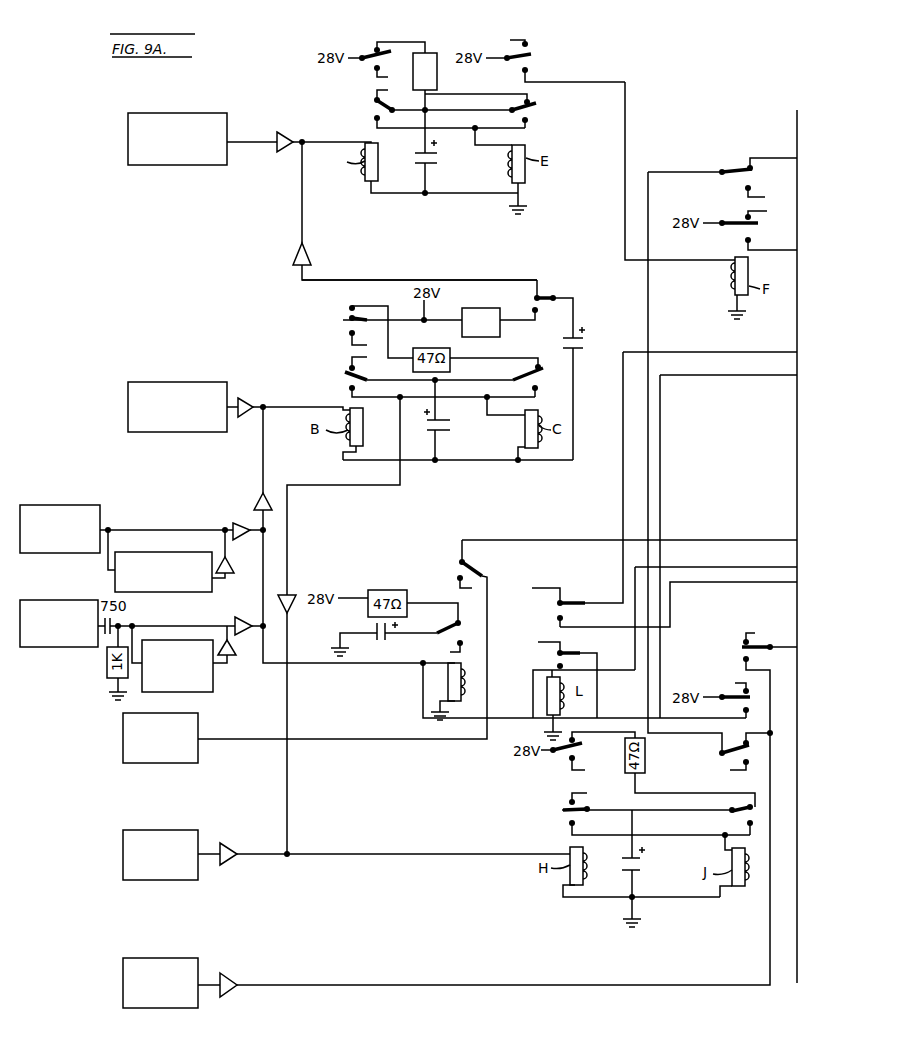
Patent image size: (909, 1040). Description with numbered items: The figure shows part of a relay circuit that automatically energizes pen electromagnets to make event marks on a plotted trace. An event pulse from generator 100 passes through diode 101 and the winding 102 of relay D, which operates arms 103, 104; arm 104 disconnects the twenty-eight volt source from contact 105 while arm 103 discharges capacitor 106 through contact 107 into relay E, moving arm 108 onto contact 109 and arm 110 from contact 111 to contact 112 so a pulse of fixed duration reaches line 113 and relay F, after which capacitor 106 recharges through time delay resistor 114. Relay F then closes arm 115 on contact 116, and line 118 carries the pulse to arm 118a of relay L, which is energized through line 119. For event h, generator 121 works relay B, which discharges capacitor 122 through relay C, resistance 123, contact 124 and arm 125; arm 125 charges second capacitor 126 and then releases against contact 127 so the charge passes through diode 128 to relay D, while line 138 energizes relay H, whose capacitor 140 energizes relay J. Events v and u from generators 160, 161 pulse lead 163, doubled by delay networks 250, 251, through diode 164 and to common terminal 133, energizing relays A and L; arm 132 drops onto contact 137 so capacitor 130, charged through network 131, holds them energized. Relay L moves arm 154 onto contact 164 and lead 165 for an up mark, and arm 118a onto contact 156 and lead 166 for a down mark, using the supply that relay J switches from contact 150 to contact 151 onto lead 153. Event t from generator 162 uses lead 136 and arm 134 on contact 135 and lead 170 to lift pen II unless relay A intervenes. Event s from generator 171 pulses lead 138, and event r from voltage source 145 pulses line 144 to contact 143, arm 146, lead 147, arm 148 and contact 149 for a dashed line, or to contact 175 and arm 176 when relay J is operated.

The generator 100 is at (124, 137).
The diode 101 is at (282, 128).
The winding of relay D 102 is at (378, 164).
The arm 103 is at (372, 104).
The arm 104 is at (383, 64).
The contact 105 is at (382, 40).
The capacitor 106 is at (439, 164).
The contact 107 is at (372, 122).
The arm 108 is at (540, 104).
The contact 109 is at (537, 123).
The arm 110 is at (510, 64).
The contact 111 is at (531, 44).
The contact 112 is at (533, 70).
The line 113 is at (628, 108).
The time delay resistor 114 is at (437, 72).
The arm 115 is at (729, 231).
The contact 116 is at (751, 242).
The line 118 is at (742, 352).
The upper arm of relay L 118a is at (584, 593).
The line 119 is at (496, 718).
The generator 121 is at (128, 418).
The capacitor 122 is at (441, 421).
The resistance 123 is at (496, 308).
The contact 124 is at (533, 328).
The relay arm 125 is at (555, 296).
The second capacitor 126 is at (580, 352).
The contact 127 is at (539, 280).
The diode 128 is at (312, 251).
The capacitor 130 is at (387, 645).
The network 131 is at (342, 617).
The arm 132 is at (439, 631).
The common terminal 133 is at (422, 667).
The arm 134 is at (469, 570).
The contact 135 is at (462, 550).
The lead 136 is at (305, 739).
The contact 137 is at (478, 652).
The line 138 is at (402, 487).
The capacitor 140 is at (637, 875).
The operating contact 143 is at (725, 746).
The line 144 is at (759, 779).
The voltage source 145 is at (123, 980).
The arm 146 is at (724, 765).
The lead 147 is at (651, 189).
The arm 148 is at (735, 165).
The contact 149 is at (752, 157).
The contact 150 is at (730, 686).
The contact 151 is at (731, 718).
The lead 153 is at (663, 502).
The arm 154 is at (567, 653).
The contact 156 is at (564, 627).
The generator 160 is at (79, 506).
The generator 161 is at (57, 600).
The generator 162 is at (123, 751).
The lead 163 is at (287, 566).
The diode 164 is at (255, 502).
The lead 165 is at (732, 567).
The lead 166 is at (740, 584).
The lead 170 is at (738, 540).
The generator 171 is at (123, 849).
The contact 175 is at (742, 660).
The arm 176 is at (768, 634).
The delay network 250 is at (171, 575).
The delay network 251 is at (210, 693).